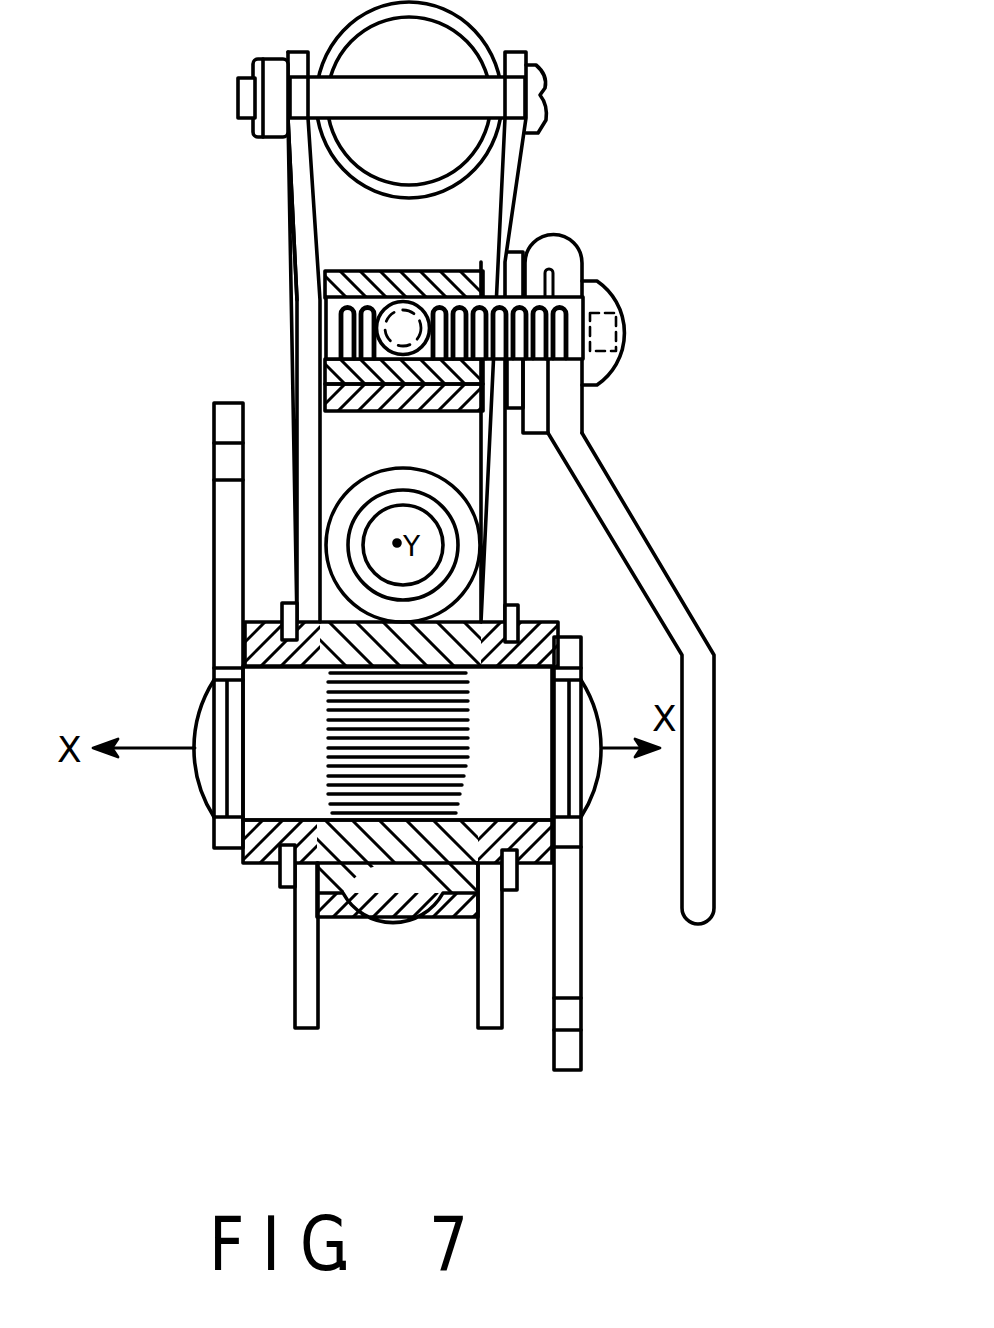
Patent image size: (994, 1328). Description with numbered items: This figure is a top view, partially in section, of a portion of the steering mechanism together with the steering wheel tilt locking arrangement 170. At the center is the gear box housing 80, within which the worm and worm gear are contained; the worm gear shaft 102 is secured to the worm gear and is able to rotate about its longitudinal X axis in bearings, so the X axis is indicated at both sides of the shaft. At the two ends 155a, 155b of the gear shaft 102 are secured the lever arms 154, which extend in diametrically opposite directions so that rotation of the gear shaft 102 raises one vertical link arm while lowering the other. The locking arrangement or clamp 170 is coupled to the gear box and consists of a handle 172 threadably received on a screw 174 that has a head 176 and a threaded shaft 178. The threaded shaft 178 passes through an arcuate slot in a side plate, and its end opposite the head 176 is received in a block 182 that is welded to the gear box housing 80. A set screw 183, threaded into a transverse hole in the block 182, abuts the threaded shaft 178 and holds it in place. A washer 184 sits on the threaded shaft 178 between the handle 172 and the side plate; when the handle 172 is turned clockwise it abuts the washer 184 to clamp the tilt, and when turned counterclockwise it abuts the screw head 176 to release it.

The gear box housing 80 is at (322, 394).
The worm gear shaft 102 is at (247, 868).
The lever arms 154 is at (207, 515).
The end of gear shaft 155a is at (600, 793).
The end of gear shaft 155b is at (200, 785).
The steering wheel tilt locking arrangement 170 is at (692, 513).
The handle 172 is at (714, 688).
The screw 174 is at (618, 292).
The head 176 is at (596, 390).
The threaded shaft 178 is at (530, 267).
The block 182 is at (330, 304).
The set screw 183 is at (390, 304).
The washer 184 is at (507, 295).